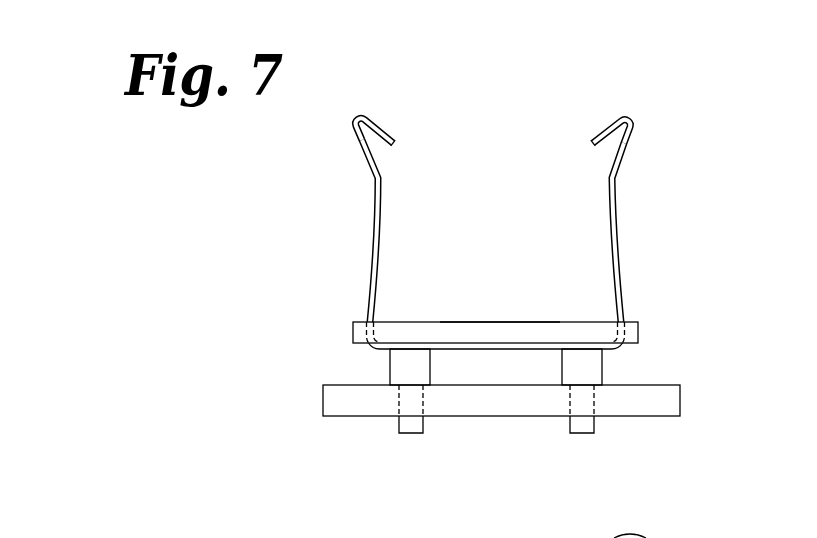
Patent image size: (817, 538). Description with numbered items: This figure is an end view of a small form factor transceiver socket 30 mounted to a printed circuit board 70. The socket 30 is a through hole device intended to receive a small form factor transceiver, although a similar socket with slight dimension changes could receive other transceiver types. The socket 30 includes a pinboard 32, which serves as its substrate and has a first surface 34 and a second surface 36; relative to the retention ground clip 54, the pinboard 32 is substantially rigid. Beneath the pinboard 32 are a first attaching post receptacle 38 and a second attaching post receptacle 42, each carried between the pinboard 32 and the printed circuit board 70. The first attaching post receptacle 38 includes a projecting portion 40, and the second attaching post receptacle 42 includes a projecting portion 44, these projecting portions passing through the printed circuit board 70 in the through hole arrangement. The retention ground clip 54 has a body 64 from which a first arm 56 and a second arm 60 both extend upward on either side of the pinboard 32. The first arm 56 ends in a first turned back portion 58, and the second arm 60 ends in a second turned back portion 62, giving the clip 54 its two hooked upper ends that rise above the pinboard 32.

The small form factor transceiver socket 30 is at (477, 283).
The pinboard 32 is at (638, 330).
The first surface 34 is at (497, 322).
The second surface 36 is at (360, 348).
The first attaching post receptacle 38 is at (602, 375).
The projecting portion 40 is at (595, 417).
The second attaching post receptacle 42 is at (390, 371).
The projecting portion 44 is at (398, 428).
The retention ground clip 54 is at (458, 353).
The first arm 56 is at (620, 257).
The first turned back portion 58 is at (595, 140).
The second arm 60 is at (373, 212).
The second turned back portion 62 is at (380, 125).
The body 64 is at (538, 350).
The printed circuit board 70 is at (335, 417).